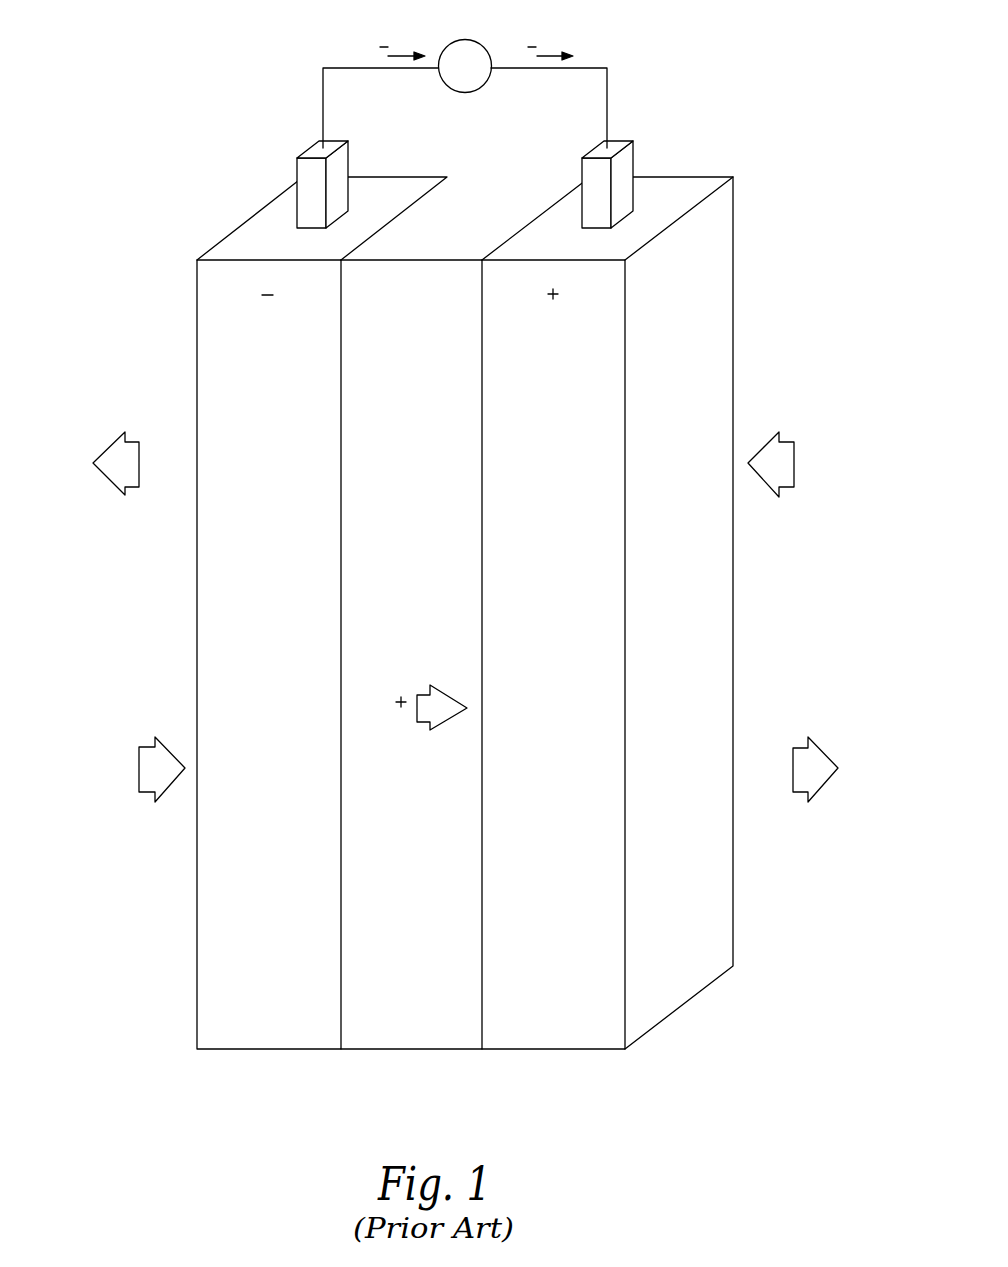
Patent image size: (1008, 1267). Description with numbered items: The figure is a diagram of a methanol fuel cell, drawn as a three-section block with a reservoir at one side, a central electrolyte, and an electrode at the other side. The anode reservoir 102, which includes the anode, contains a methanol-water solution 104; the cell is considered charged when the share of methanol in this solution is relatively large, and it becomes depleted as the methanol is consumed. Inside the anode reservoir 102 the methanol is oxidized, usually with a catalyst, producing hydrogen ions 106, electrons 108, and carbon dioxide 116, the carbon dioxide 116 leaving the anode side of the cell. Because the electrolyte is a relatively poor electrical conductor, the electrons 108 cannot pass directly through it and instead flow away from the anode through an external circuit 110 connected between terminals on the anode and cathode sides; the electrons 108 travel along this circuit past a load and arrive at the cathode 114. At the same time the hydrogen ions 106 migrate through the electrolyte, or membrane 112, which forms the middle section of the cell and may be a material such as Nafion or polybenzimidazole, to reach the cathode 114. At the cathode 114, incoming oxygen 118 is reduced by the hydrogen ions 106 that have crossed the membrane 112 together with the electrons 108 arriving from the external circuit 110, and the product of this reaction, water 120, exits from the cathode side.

The anode reservoir 102 is at (245, 243).
The methanol-water solution 104 is at (93, 750).
The hydrogen ions 106 is at (375, 710).
The electrons 108 is at (362, 56).
The external circuit 110 is at (583, 67).
The membrane 112 is at (367, 341).
The cathode 114 is at (702, 185).
The carbon dioxide 116 is at (163, 447).
The oxygen 118 is at (818, 450).
The water 120 is at (763, 758).